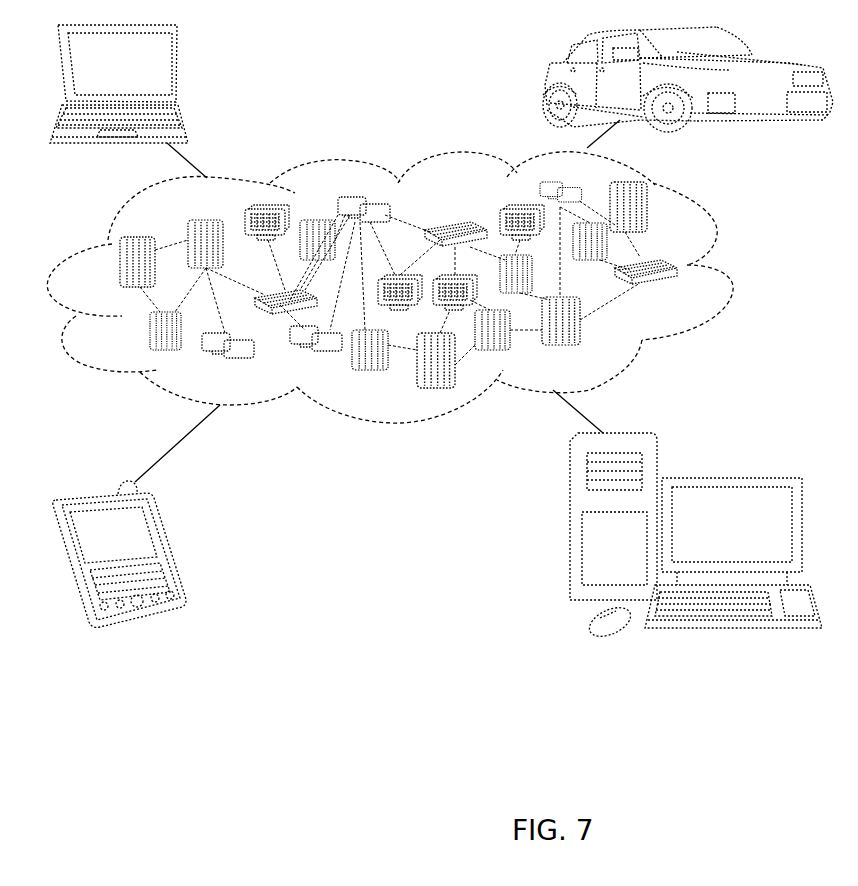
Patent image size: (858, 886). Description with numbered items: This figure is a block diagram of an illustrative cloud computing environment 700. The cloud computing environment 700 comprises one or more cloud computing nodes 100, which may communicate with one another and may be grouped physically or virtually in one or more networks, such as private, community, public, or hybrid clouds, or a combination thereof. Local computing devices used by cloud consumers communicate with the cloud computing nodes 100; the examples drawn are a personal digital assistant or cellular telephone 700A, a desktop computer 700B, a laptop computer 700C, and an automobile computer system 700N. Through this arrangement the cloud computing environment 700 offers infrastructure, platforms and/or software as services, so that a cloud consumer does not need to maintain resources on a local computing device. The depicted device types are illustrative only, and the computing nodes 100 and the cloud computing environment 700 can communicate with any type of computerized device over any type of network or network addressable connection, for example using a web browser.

The cloud computing environment 700 is at (742, 262).
The cloud computing nodes 100 is at (680, 291).
The personal digital assistant (PDA) or cellular telephone 700A is at (172, 546).
The desktop computer 700B is at (728, 477).
The laptop computer 700C is at (180, 70).
The automobile computer system 700N is at (546, 78).